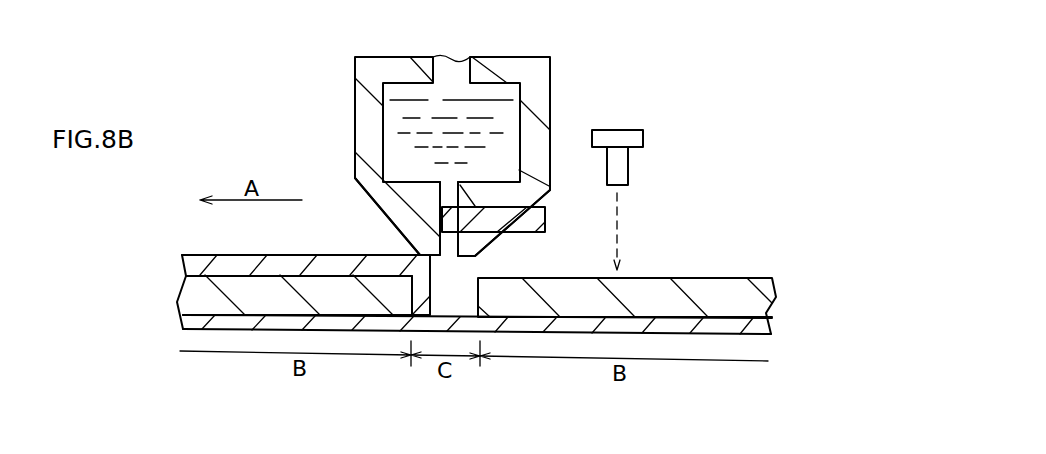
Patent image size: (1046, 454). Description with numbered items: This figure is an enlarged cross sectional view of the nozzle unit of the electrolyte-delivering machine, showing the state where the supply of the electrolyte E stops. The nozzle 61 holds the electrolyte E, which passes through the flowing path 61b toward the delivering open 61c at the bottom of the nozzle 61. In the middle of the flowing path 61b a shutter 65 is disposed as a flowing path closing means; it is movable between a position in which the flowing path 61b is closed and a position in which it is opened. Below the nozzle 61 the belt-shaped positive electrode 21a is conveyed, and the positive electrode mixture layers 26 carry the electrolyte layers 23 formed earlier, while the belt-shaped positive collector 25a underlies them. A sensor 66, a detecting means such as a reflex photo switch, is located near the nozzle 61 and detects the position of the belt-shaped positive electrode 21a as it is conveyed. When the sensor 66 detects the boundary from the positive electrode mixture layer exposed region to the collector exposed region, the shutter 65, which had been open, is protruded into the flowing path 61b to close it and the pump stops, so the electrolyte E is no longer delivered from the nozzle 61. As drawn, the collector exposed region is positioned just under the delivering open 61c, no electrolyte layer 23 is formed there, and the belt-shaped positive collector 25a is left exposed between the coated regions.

The nozzle 61 is at (368, 131).
The electrolyte E is at (392, 115).
The flowing path 61b is at (443, 188).
The delivering open 61c is at (452, 250).
The shutter 65 is at (535, 206).
The sensor 66 is at (628, 128).
The electrolyte layers 23 is at (297, 260).
The positive electrode mixture layers 26 is at (235, 287).
The belt-shaped positive collector 25a is at (720, 327).
The belt-shaped positive electrode 21a is at (733, 244).